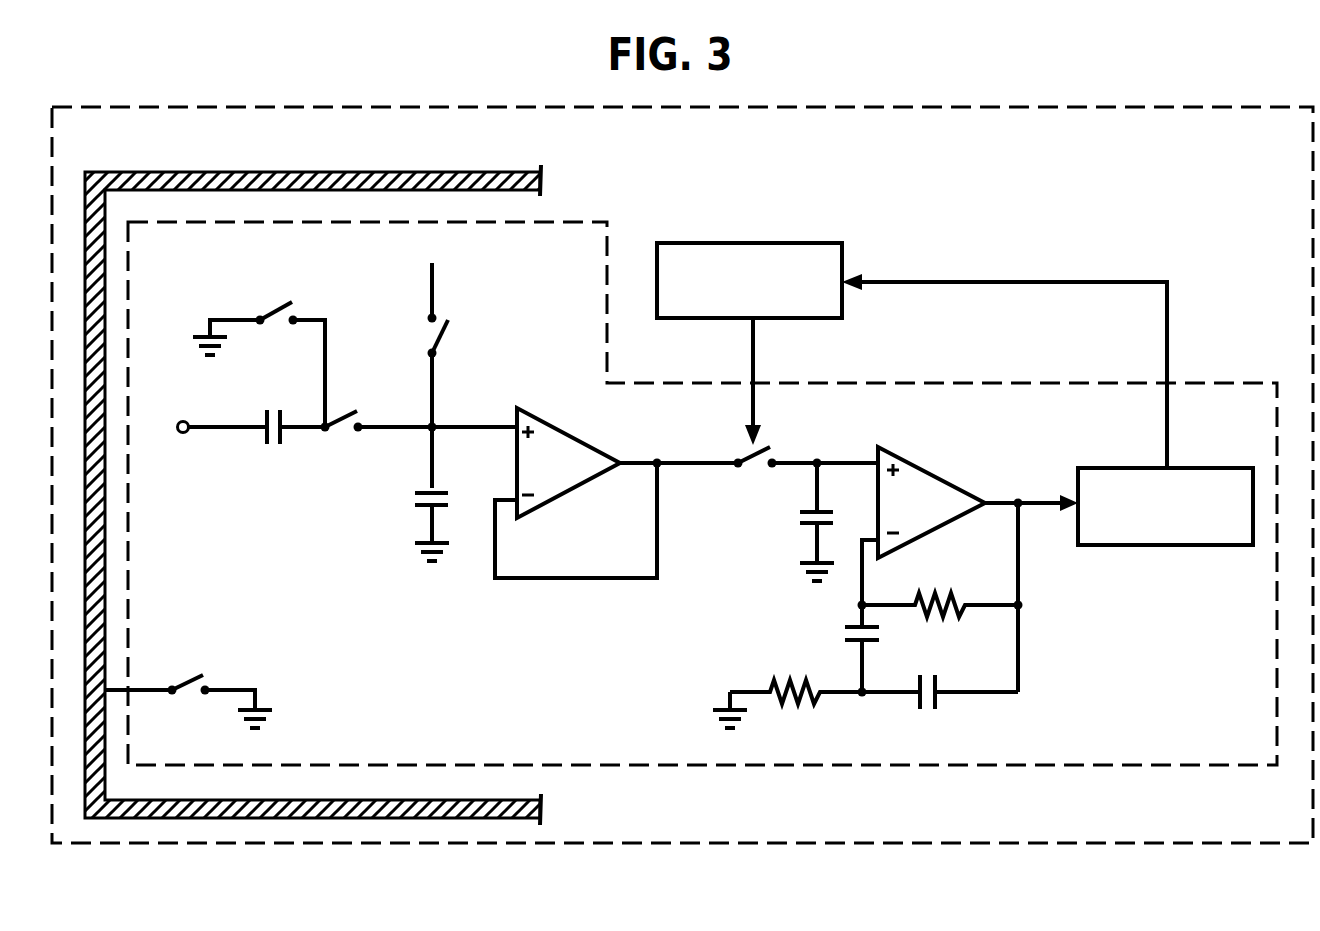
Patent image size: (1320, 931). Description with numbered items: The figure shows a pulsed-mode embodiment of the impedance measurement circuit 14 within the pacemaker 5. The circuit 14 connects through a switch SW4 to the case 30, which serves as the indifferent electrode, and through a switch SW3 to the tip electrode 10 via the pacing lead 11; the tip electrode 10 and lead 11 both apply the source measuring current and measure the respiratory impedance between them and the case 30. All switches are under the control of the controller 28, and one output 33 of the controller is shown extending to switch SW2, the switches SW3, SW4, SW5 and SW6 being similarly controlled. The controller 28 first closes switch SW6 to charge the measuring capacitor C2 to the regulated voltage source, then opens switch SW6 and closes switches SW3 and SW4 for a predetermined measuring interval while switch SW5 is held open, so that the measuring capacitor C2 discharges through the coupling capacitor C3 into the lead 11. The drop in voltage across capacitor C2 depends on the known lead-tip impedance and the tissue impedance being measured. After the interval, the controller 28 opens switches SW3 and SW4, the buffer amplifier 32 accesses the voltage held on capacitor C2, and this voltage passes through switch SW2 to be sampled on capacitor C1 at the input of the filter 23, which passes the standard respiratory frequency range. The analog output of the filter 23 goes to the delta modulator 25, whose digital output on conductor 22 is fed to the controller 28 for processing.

The pacemaker 5 is at (1293, 108).
The case 30 is at (382, 173).
The impedance measurement circuit 14 is at (1217, 384).
The tip electrode 10 is at (180, 433).
The pacing lead 11 is at (224, 423).
The coupling capacitor C3 is at (275, 444).
The switch SW5 is at (283, 306).
The switch SW3 is at (338, 423).
The switch SW6 is at (443, 340).
The measuring capacitor C2 is at (418, 508).
The buffer amplifier 32 is at (562, 447).
The controller 28 is at (678, 253).
The output of the controller 33 is at (753, 337).
The conductor 22 is at (966, 285).
The switch SW2 is at (752, 467).
The capacitor C1 is at (800, 528).
The filter 23 is at (925, 478).
The delta modulator 25 is at (1092, 478).
The switch SW4 is at (190, 675).